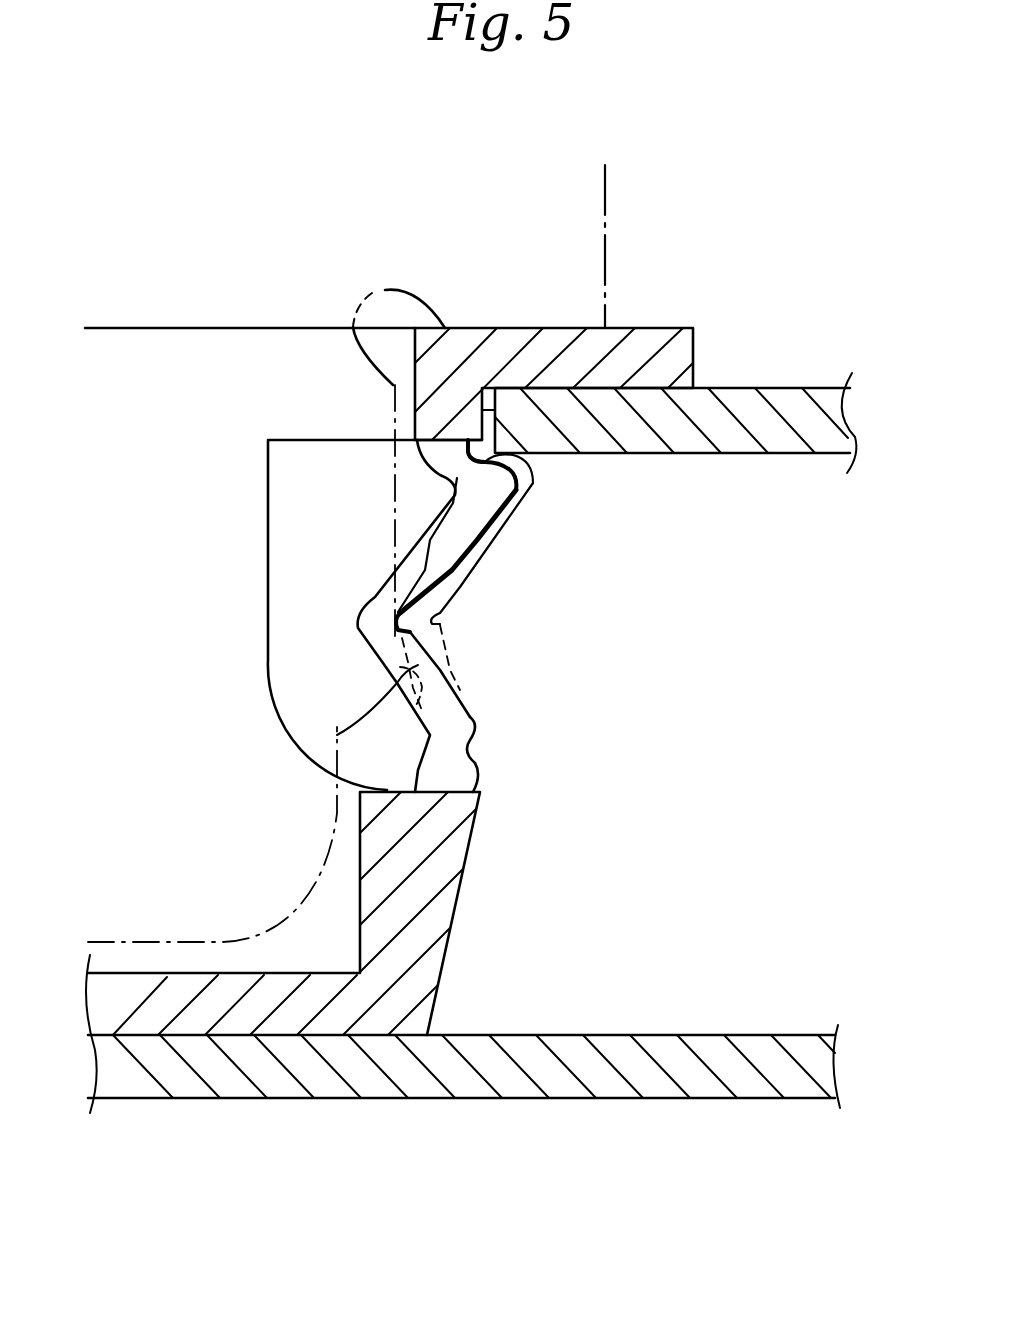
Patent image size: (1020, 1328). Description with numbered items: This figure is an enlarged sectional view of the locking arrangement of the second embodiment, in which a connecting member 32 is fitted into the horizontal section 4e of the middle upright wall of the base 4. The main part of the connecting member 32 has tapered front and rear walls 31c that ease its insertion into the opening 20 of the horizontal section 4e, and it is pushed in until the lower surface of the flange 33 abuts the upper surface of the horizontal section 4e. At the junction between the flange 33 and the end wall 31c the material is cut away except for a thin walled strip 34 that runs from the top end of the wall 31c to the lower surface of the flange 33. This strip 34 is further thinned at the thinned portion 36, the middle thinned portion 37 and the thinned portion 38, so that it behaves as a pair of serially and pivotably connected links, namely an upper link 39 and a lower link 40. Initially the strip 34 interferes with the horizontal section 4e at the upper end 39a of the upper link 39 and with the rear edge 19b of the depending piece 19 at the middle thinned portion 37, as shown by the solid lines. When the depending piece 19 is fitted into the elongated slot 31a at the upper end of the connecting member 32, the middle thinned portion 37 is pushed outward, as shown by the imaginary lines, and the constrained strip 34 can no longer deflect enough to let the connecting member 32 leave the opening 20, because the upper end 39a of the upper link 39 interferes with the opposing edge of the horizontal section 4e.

The base 4 is at (573, 1110).
The horizontal section 4e is at (768, 385).
The depending piece 19 is at (605, 203).
The rear edge of the depending piece 19b is at (350, 733).
The opening 20 is at (482, 405).
The elongated slot 31a is at (410, 347).
The front and rear walls 31c is at (447, 953).
The connecting member 32 is at (212, 316).
The flange 33 is at (657, 328).
The thin walled strip 34 is at (448, 533).
The thinned portion 36 is at (495, 458).
The middle thinned portion 37 is at (440, 623).
The thinned portion 38 is at (477, 747).
The upper link 39 is at (477, 555).
The upper end of the upper link 39a is at (502, 470).
The lower link 40 is at (460, 697).